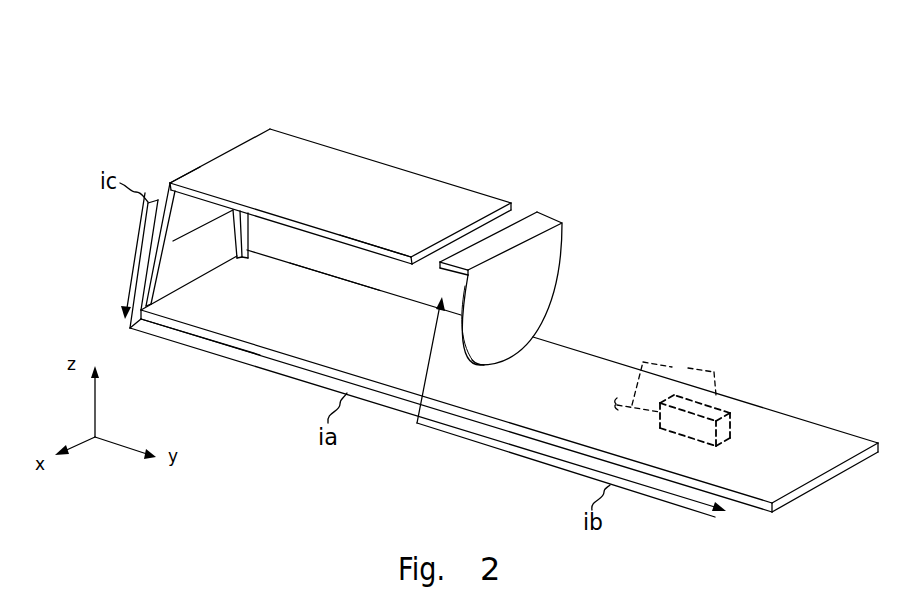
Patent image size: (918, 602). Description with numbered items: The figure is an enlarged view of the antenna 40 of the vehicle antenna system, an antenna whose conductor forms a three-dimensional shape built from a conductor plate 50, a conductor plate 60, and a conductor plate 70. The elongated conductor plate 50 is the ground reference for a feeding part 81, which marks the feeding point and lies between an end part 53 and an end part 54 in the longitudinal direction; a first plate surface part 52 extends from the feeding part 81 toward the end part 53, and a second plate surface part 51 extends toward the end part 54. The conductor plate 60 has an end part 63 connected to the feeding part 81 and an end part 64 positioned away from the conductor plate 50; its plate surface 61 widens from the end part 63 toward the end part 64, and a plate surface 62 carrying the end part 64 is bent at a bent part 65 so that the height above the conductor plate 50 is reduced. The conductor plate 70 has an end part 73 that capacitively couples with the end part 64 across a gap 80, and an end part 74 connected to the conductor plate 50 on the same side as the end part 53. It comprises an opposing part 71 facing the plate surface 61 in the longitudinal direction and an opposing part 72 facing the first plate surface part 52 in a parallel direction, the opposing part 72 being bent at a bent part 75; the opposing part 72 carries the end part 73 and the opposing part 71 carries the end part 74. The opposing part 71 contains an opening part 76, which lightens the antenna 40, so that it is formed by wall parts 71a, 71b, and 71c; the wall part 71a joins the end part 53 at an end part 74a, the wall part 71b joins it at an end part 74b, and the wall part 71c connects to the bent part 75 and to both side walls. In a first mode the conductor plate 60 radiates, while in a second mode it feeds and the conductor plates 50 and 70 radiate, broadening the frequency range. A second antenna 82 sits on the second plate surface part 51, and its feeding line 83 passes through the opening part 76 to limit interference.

The antenna 40 is at (726, 157).
The conductor plate 50 is at (509, 381).
The second plate surface part 51 is at (590, 353).
The first plate surface part 52 is at (330, 283).
The end part 53 is at (198, 292).
The end part 54 is at (810, 476).
The conductor plate 60 is at (556, 302).
The plate surface 61 is at (539, 309).
The plate surface 62 is at (529, 254).
The end part 63 is at (483, 353).
The end part 64 is at (490, 243).
The bent part 65 is at (520, 248).
The conductor plate 70 is at (323, 197).
The opposing part 71 is at (200, 220).
The wall part 71a is at (153, 297).
The wall part 71b is at (238, 262).
The wall part 71c is at (187, 228).
The opposing part 72 is at (198, 177).
The end part 73 is at (423, 244).
The end part 74 is at (107, 264).
The end part 74a is at (143, 305).
The end part 74b is at (200, 252).
The bent part 75 is at (243, 134).
The opening part 76 is at (173, 240).
The gap 80 is at (512, 216).
The feeding part 81 is at (483, 367).
The second antenna 82 is at (710, 375).
The feeding line 83 is at (677, 395).